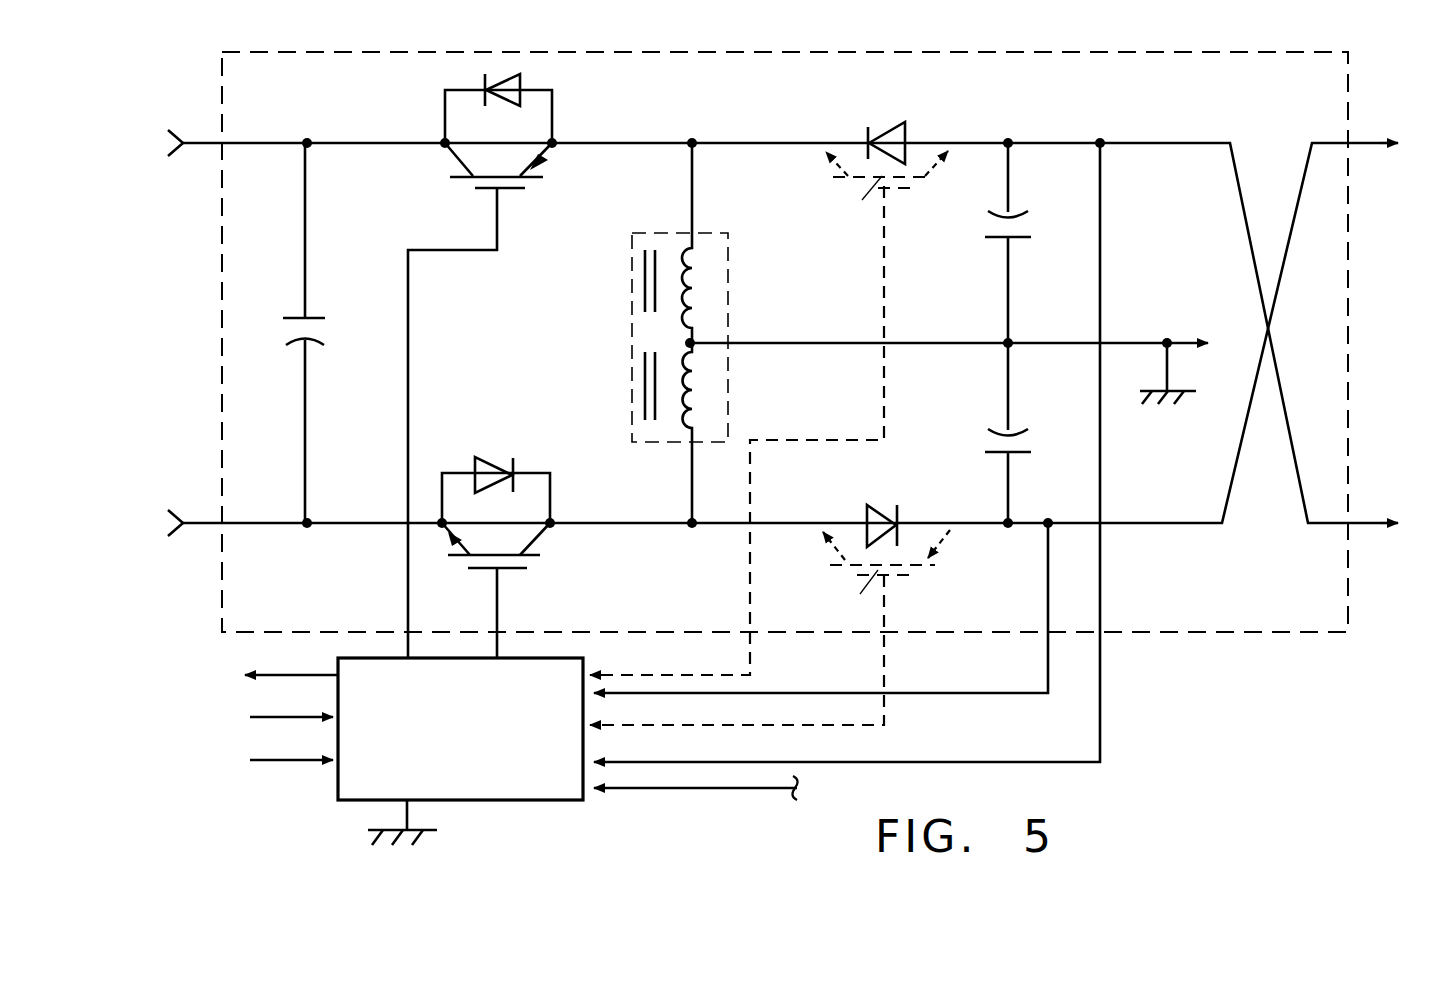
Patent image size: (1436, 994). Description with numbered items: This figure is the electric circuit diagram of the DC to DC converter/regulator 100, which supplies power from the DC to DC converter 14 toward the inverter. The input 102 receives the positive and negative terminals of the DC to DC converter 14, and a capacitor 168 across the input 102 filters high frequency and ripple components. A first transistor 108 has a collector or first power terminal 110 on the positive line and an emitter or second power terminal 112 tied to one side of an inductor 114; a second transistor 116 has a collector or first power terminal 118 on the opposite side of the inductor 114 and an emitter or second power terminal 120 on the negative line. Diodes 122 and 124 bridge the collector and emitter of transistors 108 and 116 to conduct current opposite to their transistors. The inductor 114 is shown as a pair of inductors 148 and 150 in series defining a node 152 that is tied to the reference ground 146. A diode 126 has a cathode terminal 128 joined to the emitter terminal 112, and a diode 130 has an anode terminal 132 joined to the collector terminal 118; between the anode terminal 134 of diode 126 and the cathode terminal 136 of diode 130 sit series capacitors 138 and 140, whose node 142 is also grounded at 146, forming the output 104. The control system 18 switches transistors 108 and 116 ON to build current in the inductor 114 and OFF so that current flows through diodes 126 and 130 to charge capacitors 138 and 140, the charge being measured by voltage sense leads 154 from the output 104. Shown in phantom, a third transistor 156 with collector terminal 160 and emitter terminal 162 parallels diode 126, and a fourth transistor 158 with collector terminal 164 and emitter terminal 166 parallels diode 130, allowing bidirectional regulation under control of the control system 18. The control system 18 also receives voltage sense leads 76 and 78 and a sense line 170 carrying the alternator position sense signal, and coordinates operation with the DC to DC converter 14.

The DC to DC converter 14 is at (217, 681).
The control system 18 is at (540, 803).
The voltage sense lead 76 is at (283, 720).
The voltage sense lead 78 is at (287, 763).
The DC to DC converter/regulator 100 is at (1268, 633).
The input 102 is at (205, 307).
The output 104 is at (1355, 312).
The first transistor 108 is at (455, 162).
The collector or first power terminal 110 is at (443, 140).
The emitter or second power terminal 112 is at (553, 140).
The inductor 114 is at (730, 244).
The second transistor 116 is at (537, 535).
The collector or first power terminal 118 is at (552, 520).
The emitter or second power terminal 120 is at (440, 520).
The diode 122 is at (523, 92).
The diode 124 is at (487, 460).
The diode 126 is at (890, 123).
The cathode terminal 128 is at (866, 128).
The diode 130 is at (870, 510).
The anode terminal 132 is at (863, 512).
The anode terminal 134 is at (906, 143).
The cathode terminal 136 is at (900, 522).
The capacitor 138 is at (1022, 240).
The capacitor 140 is at (1024, 454).
The node 142 is at (1010, 342).
The ground potential or reference ground 146 is at (1192, 400).
The inductor 148 is at (688, 300).
The inductor 150 is at (688, 413).
The node 152 is at (693, 346).
The voltage sense leads 154 is at (1033, 604).
The third transistor 156 is at (912, 192).
The fourth transistor 158 is at (935, 568).
The collector or first power terminal 160 is at (818, 160).
The emitter or second power terminal 162 is at (955, 150).
The collector or first power terminal 164 is at (948, 535).
The emitter or second power terminal 166 is at (818, 540).
The capacitor 168 is at (302, 317).
The sense line 170 is at (722, 790).